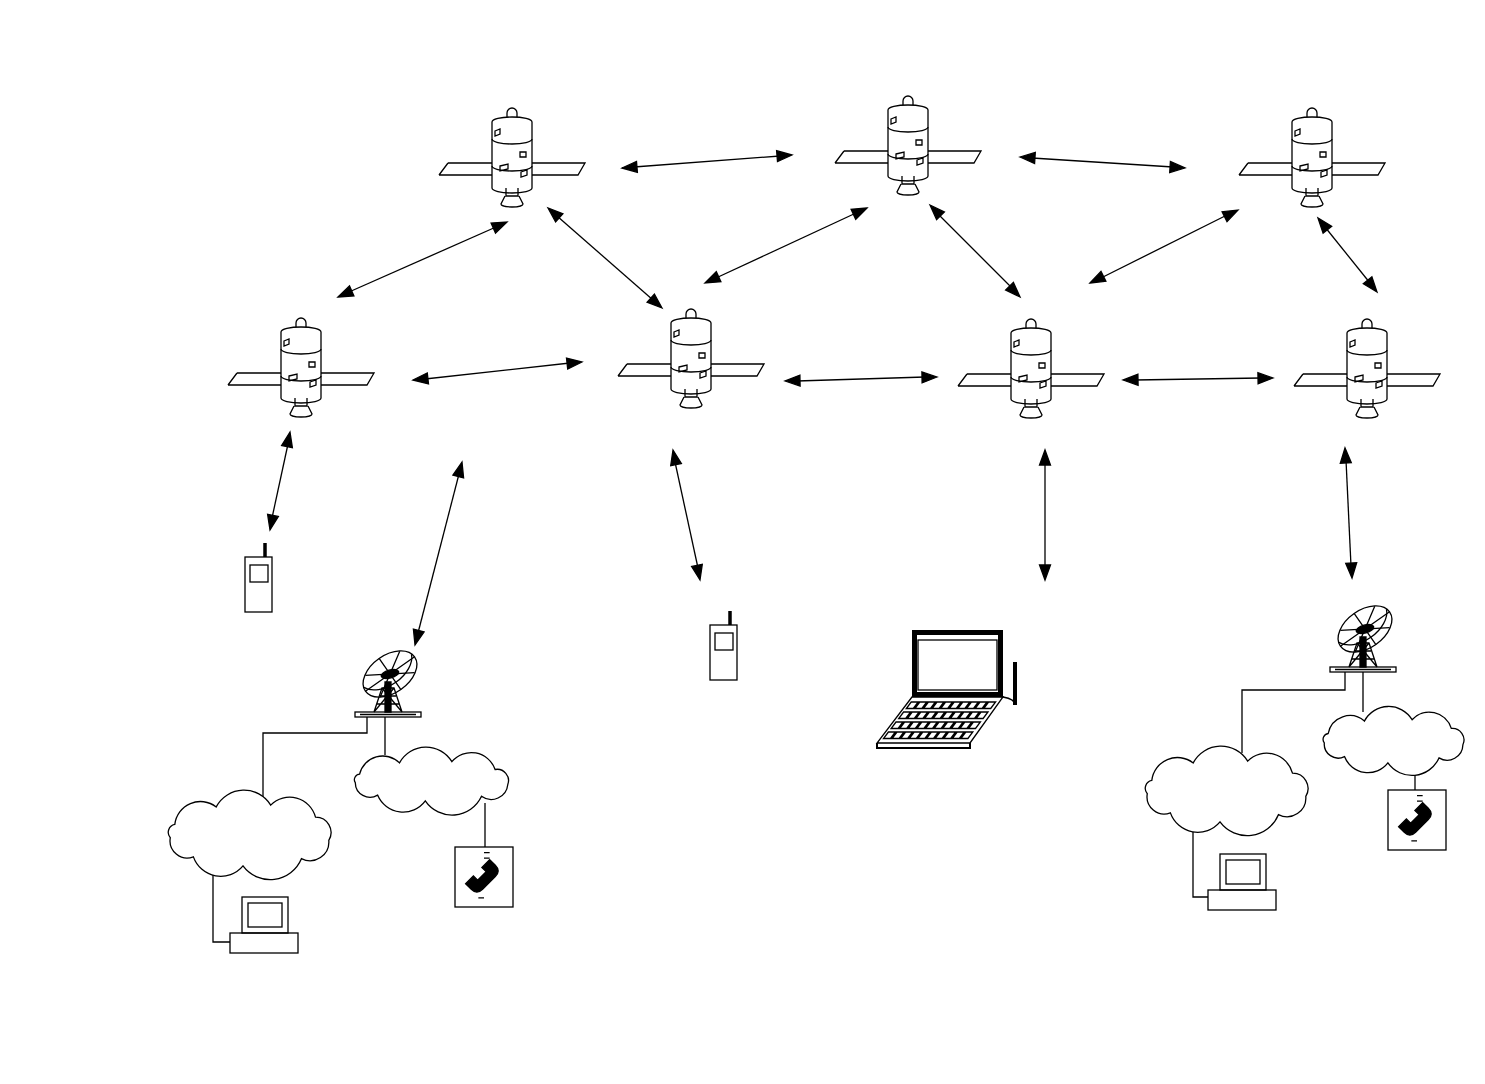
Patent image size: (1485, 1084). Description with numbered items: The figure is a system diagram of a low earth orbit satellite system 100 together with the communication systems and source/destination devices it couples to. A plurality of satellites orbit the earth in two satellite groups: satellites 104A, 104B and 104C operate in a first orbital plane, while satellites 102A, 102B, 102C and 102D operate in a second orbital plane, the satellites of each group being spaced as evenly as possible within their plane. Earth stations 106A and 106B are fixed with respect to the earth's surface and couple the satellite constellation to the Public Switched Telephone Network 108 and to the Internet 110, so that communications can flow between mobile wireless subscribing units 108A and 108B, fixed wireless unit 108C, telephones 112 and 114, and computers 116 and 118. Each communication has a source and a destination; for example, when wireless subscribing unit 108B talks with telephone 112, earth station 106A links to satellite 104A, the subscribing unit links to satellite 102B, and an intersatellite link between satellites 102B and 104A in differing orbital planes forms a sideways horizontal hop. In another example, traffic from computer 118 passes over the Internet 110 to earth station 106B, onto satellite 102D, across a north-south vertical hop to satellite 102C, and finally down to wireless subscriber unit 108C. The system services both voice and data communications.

The low earth orbit satellite system 100 is at (958, 812).
The satellite 102A is at (321, 341).
The satellite 102B is at (711, 332).
The satellite 102C is at (1051, 342).
The satellite 102D is at (1387, 342).
The satellite 104A is at (532, 129).
The satellite 104B is at (928, 117).
The satellite 104C is at (1332, 129).
The earth station 106A is at (355, 711).
The earth station 106B is at (1332, 665).
The Public Switched Telephone Network 108 is at (470, 756).
The wireless subscribing unit 108A is at (245, 596).
The wireless subscribing unit 108B is at (710, 663).
The wireless subscribing unit 108C is at (940, 632).
The Internet 110 is at (340, 833).
The telephone 112 is at (455, 892).
The telephone 114 is at (1388, 833).
The computer 116 is at (300, 941).
The computer 118 is at (1278, 905).